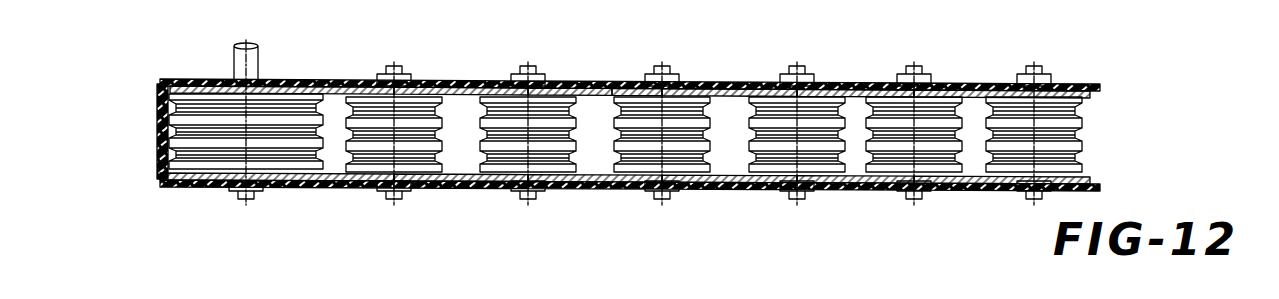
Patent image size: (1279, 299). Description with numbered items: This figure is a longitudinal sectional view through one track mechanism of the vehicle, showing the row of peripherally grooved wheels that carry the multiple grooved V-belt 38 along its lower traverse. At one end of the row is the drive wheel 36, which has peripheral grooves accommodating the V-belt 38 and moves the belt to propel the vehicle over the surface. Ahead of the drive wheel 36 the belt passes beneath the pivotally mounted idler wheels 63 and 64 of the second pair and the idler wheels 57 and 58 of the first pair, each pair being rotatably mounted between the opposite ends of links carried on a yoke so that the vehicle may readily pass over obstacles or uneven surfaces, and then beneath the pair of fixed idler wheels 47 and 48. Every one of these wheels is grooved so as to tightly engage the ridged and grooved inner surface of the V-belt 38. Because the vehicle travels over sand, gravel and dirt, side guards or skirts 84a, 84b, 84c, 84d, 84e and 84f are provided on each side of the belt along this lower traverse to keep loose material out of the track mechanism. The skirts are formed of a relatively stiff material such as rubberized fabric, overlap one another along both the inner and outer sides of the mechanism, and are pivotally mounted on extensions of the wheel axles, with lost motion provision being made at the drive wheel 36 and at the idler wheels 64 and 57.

The drive wheel 36 is at (200, 172).
The V-belt 38 is at (157, 121).
The fixed idler wheel 47 is at (1082, 125).
The fixed idler wheel 48 is at (976, 60).
The idler wheel 57 is at (826, 100).
The idler wheel 58 is at (697, 106).
The idler wheel 63 is at (357, 166).
The idler wheel 64 is at (582, 97).
The side guard or skirt 84a is at (1108, 48).
The side guard or skirt 84b is at (870, 84).
The side guard or skirt 84c is at (746, 84).
The side guard or skirt 84d is at (620, 82).
The side guard or skirt 84e is at (494, 45).
The side guard or skirt 84f is at (338, 83).